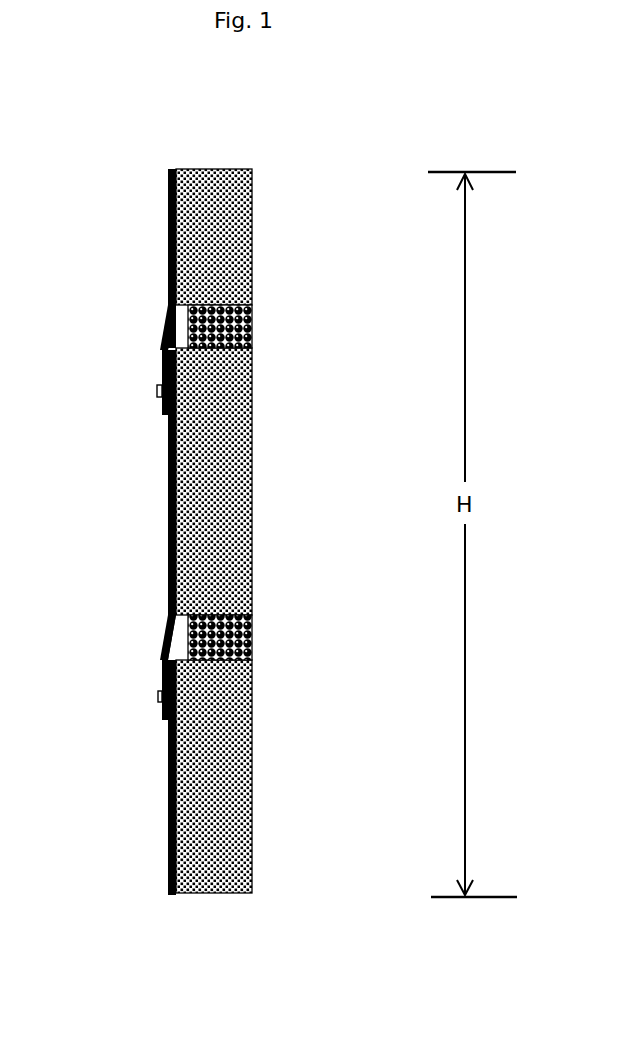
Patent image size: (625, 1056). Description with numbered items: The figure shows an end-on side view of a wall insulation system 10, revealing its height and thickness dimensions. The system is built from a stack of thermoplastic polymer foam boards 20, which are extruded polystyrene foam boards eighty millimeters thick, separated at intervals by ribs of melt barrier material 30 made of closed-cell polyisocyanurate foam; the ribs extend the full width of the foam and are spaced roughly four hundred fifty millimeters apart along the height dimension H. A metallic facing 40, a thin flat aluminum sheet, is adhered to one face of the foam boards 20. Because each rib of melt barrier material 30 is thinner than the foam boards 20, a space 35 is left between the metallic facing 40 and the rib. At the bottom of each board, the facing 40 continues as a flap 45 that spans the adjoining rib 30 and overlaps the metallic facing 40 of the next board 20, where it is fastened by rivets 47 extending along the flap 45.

The wall insulation system 10 is at (300, 153).
The thermoplastic polymer foam boards 20 is at (240, 230).
The ribs of melt barrier material 30 is at (240, 322).
The metallic facing 40 is at (168, 205).
The space 35 is at (178, 327).
The flap 45 is at (160, 378).
The rivets 47 is at (157, 393).